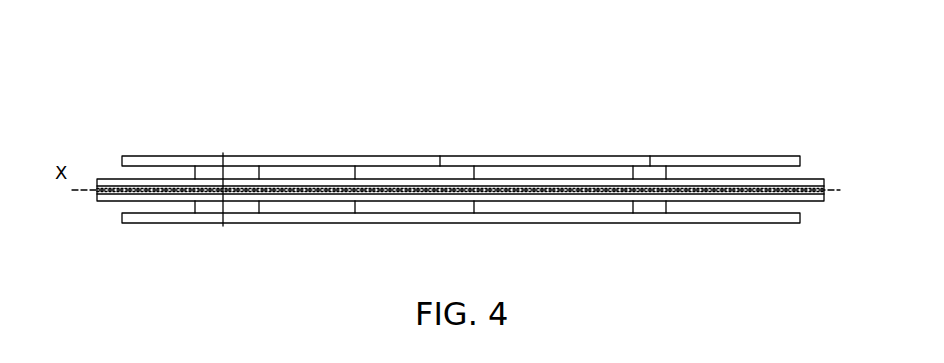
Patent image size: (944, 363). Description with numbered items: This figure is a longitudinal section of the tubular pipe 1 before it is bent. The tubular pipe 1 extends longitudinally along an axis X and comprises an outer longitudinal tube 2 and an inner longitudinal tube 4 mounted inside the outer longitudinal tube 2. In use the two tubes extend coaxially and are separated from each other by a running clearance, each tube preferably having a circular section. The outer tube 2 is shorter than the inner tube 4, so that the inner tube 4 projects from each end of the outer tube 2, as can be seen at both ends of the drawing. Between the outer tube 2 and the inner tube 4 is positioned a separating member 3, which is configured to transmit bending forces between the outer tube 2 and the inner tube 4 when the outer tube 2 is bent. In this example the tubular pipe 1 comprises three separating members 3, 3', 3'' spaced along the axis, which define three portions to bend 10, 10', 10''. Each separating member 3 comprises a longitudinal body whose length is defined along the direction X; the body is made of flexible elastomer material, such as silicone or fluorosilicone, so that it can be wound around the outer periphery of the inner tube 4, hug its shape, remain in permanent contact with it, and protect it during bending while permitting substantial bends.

The tubular pipe 1 is at (297, 66).
The outer longitudinal tube 2 is at (380, 156).
The separating member 3 is at (205, 146).
The separating member 3' is at (414, 140).
The separating member 3'' is at (673, 134).
The inner longitudinal tube 4 is at (543, 168).
The portion to bend 10 is at (239, 152).
The portion to bend 10' is at (479, 106).
The portion to bend 10'' is at (636, 107).